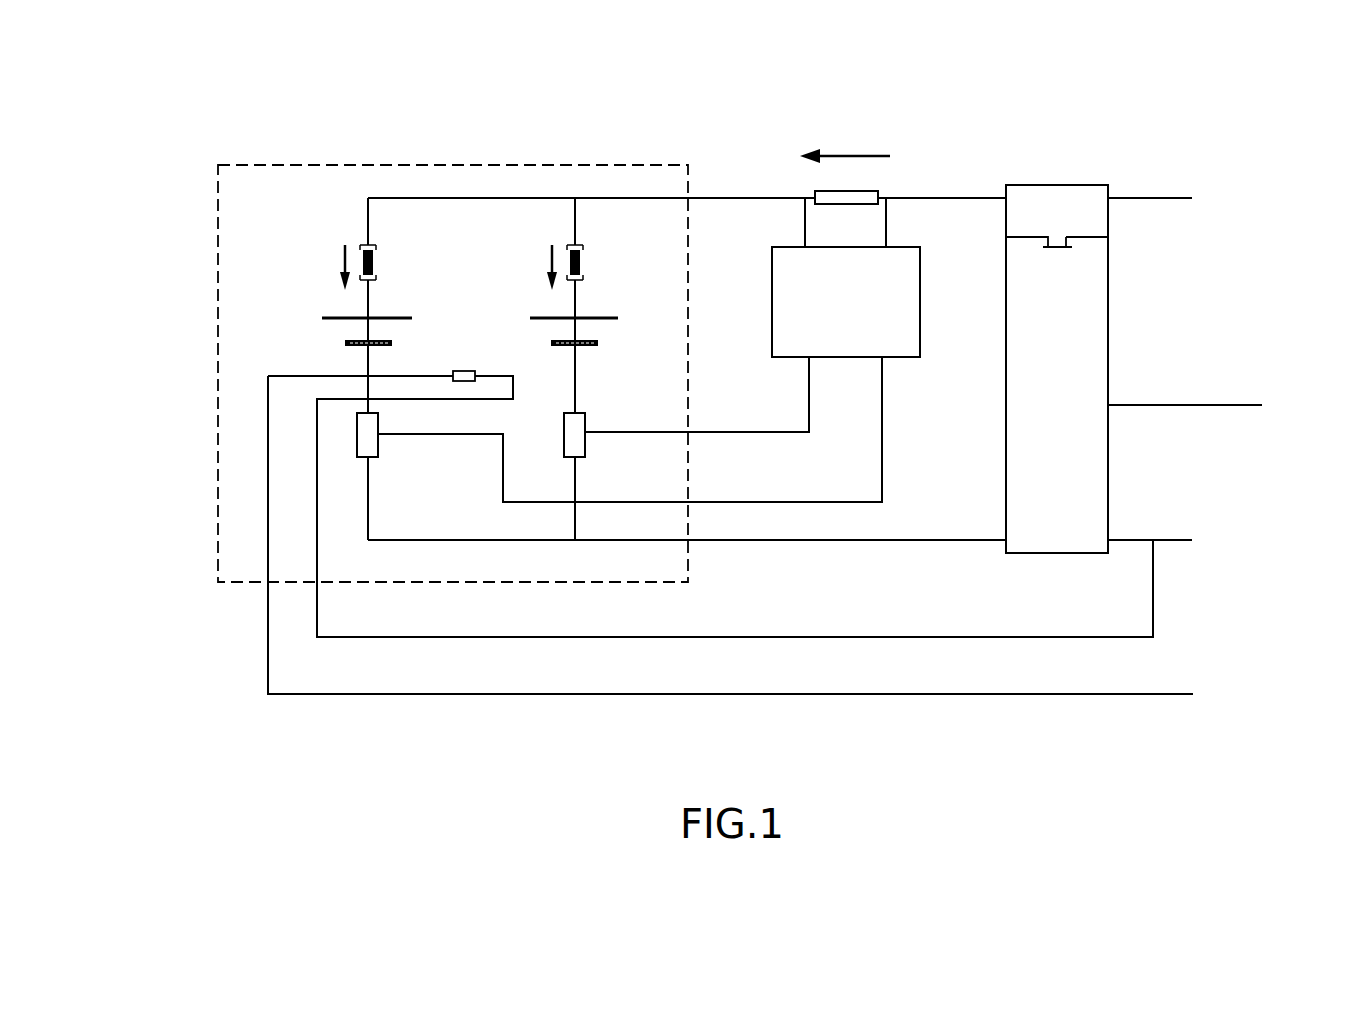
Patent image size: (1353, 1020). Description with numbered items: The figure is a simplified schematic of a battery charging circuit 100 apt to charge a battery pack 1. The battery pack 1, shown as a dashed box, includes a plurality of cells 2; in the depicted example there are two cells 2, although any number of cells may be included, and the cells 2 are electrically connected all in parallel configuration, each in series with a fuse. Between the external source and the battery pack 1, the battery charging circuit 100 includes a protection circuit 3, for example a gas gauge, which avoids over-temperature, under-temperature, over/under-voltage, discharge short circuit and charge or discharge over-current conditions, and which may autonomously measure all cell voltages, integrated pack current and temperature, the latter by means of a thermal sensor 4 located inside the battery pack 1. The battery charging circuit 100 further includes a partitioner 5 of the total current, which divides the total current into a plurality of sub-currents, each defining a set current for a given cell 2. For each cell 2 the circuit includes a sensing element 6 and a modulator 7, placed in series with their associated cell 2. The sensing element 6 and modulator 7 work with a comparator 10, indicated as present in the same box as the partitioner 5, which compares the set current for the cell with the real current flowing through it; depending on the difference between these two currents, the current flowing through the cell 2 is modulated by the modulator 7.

The battery charging circuit 100 is at (178, 71).
The battery pack 1 is at (350, 148).
The cell 2 is at (300, 307).
The protection circuit 3 is at (1052, 207).
The thermal sensor 4 is at (458, 372).
The partitioner 5 is at (903, 338).
The comparator 10 is at (846, 274).
The sensing element 6 is at (370, 440).
The modulator 7 is at (565, 437).